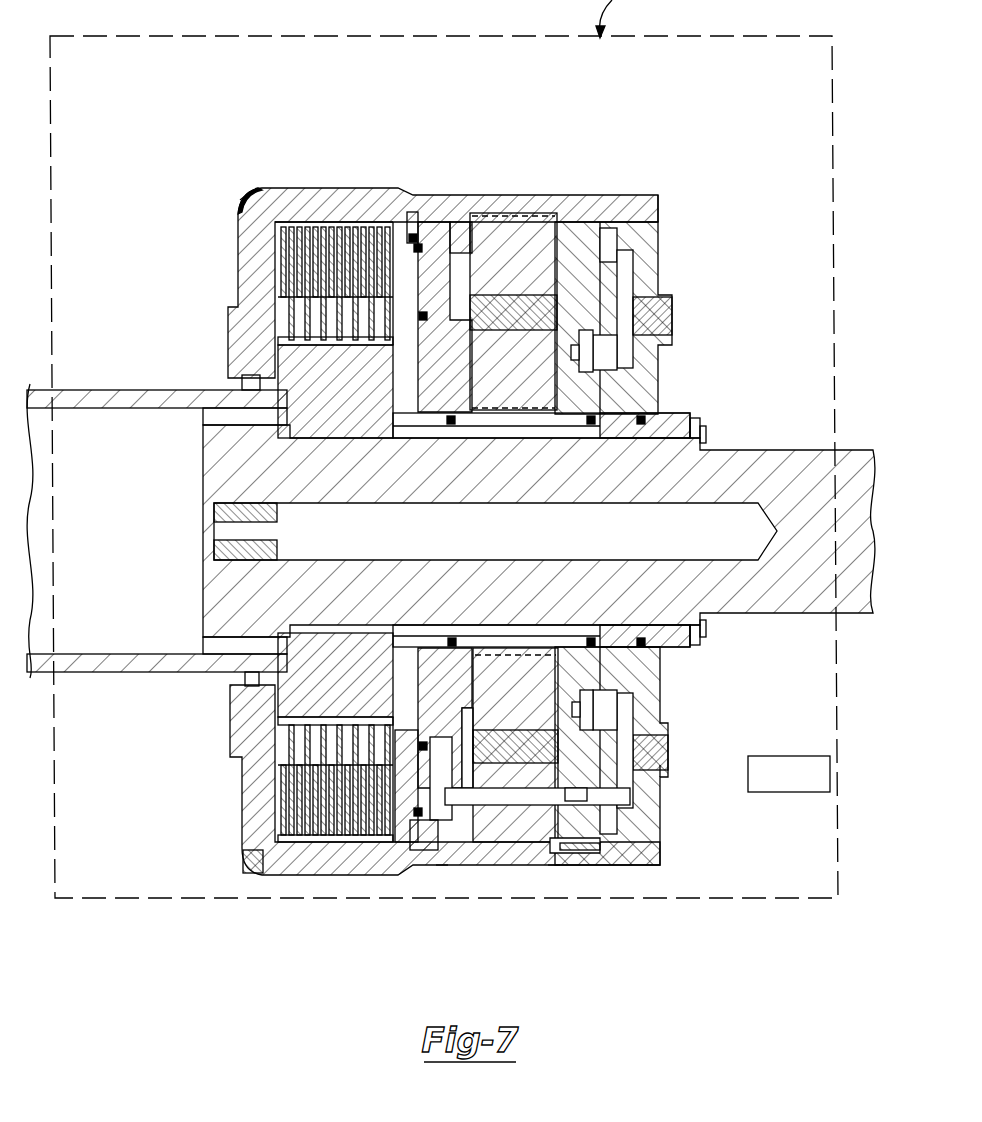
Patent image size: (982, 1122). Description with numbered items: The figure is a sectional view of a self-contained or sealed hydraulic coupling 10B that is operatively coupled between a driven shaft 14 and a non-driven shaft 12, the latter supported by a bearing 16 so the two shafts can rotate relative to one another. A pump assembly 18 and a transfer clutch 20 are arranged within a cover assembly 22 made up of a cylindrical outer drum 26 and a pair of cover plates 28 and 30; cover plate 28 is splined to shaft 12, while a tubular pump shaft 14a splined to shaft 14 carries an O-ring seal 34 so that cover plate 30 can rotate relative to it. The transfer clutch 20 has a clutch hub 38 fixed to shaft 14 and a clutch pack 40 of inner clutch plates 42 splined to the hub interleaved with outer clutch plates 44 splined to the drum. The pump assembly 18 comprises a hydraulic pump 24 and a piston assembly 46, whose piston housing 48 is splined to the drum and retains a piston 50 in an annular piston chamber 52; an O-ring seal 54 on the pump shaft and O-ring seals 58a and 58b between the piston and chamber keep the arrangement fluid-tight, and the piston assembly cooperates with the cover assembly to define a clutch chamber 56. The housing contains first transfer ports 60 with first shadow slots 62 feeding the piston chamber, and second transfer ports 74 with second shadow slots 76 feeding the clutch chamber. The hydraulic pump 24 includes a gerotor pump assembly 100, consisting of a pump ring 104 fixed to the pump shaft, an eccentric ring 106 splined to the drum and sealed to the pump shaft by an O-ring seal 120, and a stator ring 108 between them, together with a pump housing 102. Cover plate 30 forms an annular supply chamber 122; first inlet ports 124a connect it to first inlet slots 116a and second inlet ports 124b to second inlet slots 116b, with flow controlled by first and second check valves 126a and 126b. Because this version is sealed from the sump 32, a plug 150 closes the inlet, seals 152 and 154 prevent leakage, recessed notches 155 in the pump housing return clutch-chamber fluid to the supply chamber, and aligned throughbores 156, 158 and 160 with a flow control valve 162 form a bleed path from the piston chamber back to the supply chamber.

The hydraulic coupling 10B is at (236, 184).
The non-driven shaft 12 is at (95, 674).
The driven shaft 14 is at (762, 485).
The pump shaft 14a is at (655, 432).
The bearing 16 is at (222, 415).
The pump assembly 18 is at (460, 852).
The transfer clutch 20 is at (300, 745).
The cover assembly 22 is at (420, 186).
The hydraulic pump 24 is at (553, 868).
The outer drum 26 is at (410, 875).
The cover plate 28 is at (265, 258).
The cover plate 30 is at (650, 276).
The sump 32 is at (789, 792).
The O-ring seal 34 is at (642, 630).
The clutch hub 38 is at (343, 395).
The clutch pack 40 is at (300, 795).
The inner clutch plates 42 is at (290, 337).
The outer clutch plates 44 is at (318, 227).
The piston assembly 46 is at (430, 265).
The piston housing 48 is at (440, 380).
The piston 50 is at (390, 218).
The piston chamber 52 is at (442, 866).
The O-ring seal 54 is at (452, 634).
The clutch chamber 56 is at (335, 618).
The O-ring seal 58a is at (340, 877).
The O-ring seal 58b is at (412, 233).
The first transfer ports 60 is at (460, 282).
The first shadow slots 62 is at (462, 340).
The second transfer ports 74 is at (420, 740).
The second shadow slots 76 is at (464, 722).
The gerotor pump assembly 100 is at (521, 226).
The pump housing 102 is at (605, 222).
The pump ring 104 is at (515, 655).
The eccentric ring 106 is at (470, 218).
The stator ring 108 is at (553, 862).
The first inlet slots 116a is at (600, 225).
The second inlet slots 116b is at (615, 690).
The O-ring seal 120 is at (588, 345).
The supply chamber 122 is at (627, 790).
The first inlet ports 124a is at (622, 346).
The second inlet ports 124b is at (608, 700).
The first check valve 126a is at (612, 268).
The second check valve 126b is at (612, 730).
The plug 150 is at (652, 316).
The seal 152 is at (205, 430).
The seal 154 is at (250, 672).
The recessed notches 155 is at (655, 198).
The throughbore 156 is at (492, 866).
The throughbore 158 is at (515, 868).
The throughbore 160 is at (655, 847).
The flow control valve 162 is at (662, 768).